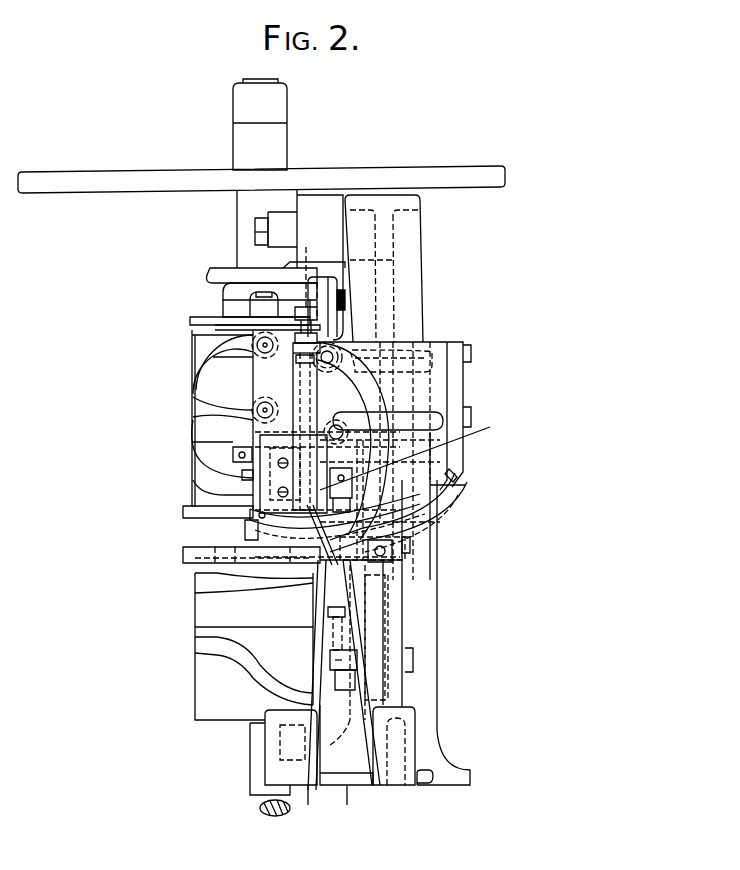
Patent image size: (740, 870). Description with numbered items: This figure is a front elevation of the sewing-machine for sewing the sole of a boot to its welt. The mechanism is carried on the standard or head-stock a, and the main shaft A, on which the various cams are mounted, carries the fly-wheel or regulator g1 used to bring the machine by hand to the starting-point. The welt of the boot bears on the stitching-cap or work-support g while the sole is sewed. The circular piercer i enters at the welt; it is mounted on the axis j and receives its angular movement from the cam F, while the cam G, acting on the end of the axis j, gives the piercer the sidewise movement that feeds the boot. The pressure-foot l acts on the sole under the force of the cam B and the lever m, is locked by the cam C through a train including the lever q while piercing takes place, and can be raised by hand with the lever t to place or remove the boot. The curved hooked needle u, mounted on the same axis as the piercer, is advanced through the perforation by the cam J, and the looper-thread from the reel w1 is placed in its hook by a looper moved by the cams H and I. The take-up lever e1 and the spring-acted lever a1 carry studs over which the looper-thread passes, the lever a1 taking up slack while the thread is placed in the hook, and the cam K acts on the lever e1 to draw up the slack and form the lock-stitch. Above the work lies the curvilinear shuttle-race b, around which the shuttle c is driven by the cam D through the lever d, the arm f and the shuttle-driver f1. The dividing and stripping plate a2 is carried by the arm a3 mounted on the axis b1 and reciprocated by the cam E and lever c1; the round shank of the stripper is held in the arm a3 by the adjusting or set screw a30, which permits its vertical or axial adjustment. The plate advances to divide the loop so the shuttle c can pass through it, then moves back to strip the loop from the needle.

The fly-wheel or regulator g1 is at (261, 179).
The lever m is at (314, 266).
The cam B is at (256, 292).
The cam C is at (190, 322).
The cam D is at (194, 376).
The cam E is at (193, 408).
The cam F is at (193, 468).
The cam G is at (183, 511).
The cam H is at (183, 555).
The cam I is at (235, 554).
The cam J is at (193, 583).
The cam K is at (195, 646).
The lever d is at (280, 362).
The lever c1 is at (273, 400).
The lever q is at (306, 426).
The arm f is at (329, 361).
The lever t is at (388, 422).
The curved hooked needle u is at (339, 490).
The axis b1 is at (427, 397).
The adjusting or set screw a30 is at (490, 427).
The arm a3 is at (432, 452).
The curvilinear shuttle-race b is at (460, 490).
The dividing and stripping plate a2 is at (370, 500).
The shuttle-driver f1 is at (430, 531).
The axis j is at (413, 548).
The stitching-cap or work-support g is at (413, 564).
The circular piercer i is at (380, 590).
The standard or head-stock a is at (437, 635).
The lever a1 is at (333, 628).
The take-up lever e1 is at (360, 689).
The reel w1 is at (352, 797).
The main shaft A is at (283, 773).
The pressure-foot l is at (245, 524).
The shuttle c is at (255, 541).